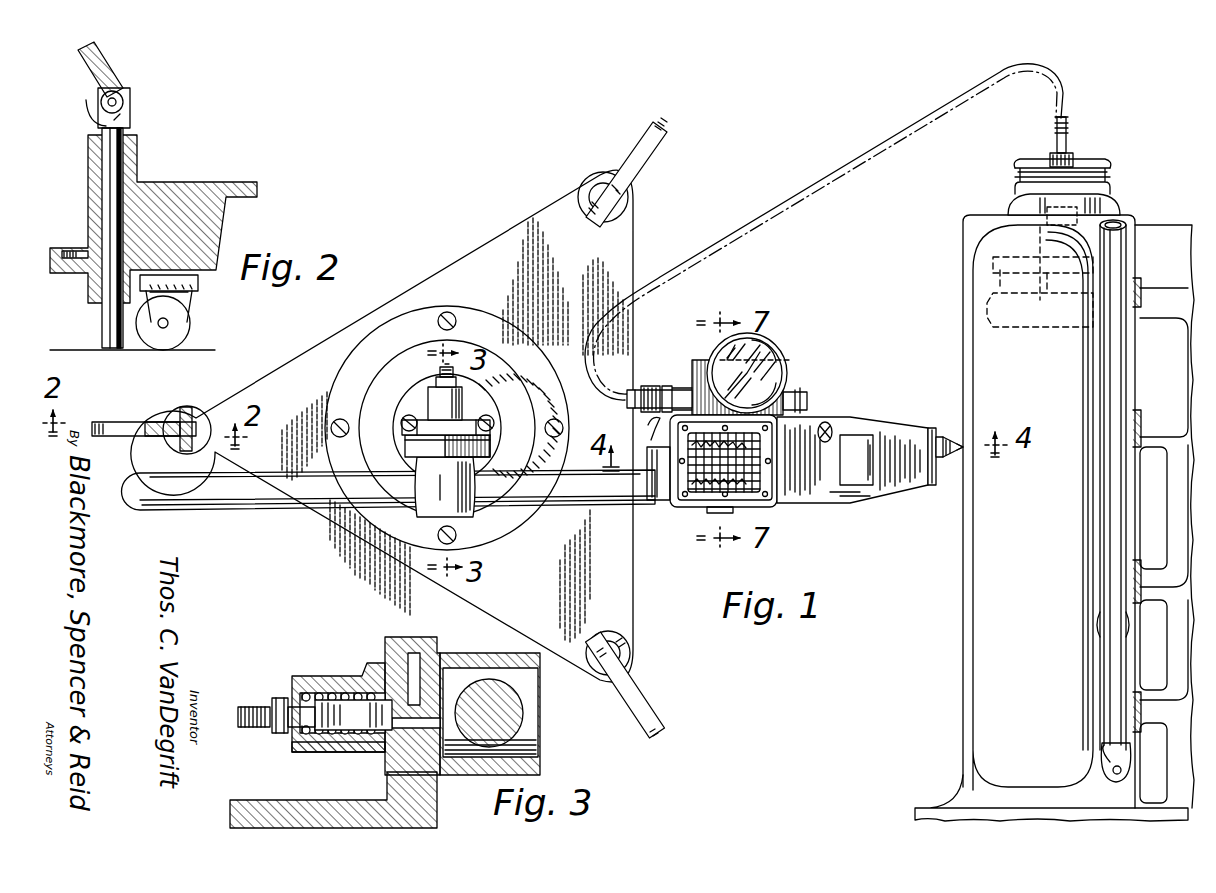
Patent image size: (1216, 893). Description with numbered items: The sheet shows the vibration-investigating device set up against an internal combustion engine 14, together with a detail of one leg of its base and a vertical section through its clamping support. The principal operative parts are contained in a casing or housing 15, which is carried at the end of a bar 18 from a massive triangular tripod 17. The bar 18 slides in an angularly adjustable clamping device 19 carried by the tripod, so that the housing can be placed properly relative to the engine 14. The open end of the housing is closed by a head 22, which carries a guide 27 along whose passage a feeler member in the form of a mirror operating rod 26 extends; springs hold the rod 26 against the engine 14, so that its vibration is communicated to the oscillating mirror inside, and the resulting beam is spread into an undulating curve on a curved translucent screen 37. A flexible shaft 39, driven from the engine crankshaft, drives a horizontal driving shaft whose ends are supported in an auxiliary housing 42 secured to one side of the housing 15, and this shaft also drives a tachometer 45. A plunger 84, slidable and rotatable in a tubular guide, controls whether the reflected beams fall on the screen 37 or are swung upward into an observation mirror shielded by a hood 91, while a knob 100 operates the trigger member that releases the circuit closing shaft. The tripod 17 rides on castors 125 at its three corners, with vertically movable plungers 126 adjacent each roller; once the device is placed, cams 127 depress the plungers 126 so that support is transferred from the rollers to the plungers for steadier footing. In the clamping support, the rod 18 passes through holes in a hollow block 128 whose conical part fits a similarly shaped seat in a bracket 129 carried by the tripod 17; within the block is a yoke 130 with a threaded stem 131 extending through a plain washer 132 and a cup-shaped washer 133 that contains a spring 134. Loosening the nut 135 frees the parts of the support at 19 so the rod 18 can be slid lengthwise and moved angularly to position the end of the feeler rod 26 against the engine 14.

In FIG. 1, the internal combustion engine 14 is at (997, 537).
In FIG. 1, the casing or housing 15 is at (842, 416).
In FIG. 2, the tripod 17 is at (225, 185).
In FIG. 1, the tripod 17 is at (477, 263).
In FIG. 1, the bar 18 is at (283, 492).
In FIG. 3, the bar 18 is at (513, 710).
In FIG. 1, the clamping device 19 is at (420, 405).
In FIG. 3, the clamping device 19 is at (377, 647).
In FIG. 1, the head 22 is at (927, 495).
In FIG. 1, the mirror operating rod 26 is at (962, 449).
In FIG. 1, the guide 27 is at (950, 443).
In FIG. 1, the translucent screen 37 is at (753, 487).
In FIG. 1, the flexible shaft 39 is at (668, 270).
In FIG. 1, the auxiliary housing 42 is at (697, 382).
In FIG. 1, the tachometer 45 is at (748, 378).
In FIG. 1, the plunger 84 is at (826, 422).
In FIG. 1, the hood 91 is at (857, 447).
In FIG. 1, the knob 100 is at (702, 508).
In FIG. 2, the castors 125 is at (178, 330).
In FIG. 2, the plungers 126 is at (112, 166).
In FIG. 2, the cams 127 is at (102, 74).
In FIG. 1, the cams 127 is at (110, 421).
In FIG. 3, the hollow block 128 is at (497, 655).
In FIG. 1, the bracket 129 is at (420, 442).
In FIG. 3, the bracket 129 is at (325, 812).
In FIG. 3, the yoke 130 is at (530, 725).
In FIG. 3, the threaded stem 131 is at (413, 703).
In FIG. 1, the plain washer 132 is at (422, 423).
In FIG. 3, the plain washer 132 is at (373, 670).
In FIG. 1, the cup-shaped washer 133 is at (432, 403).
In FIG. 3, the cup-shaped washer 133 is at (300, 751).
In FIG. 3, the spring 134 is at (337, 688).
In FIG. 1, the nut 135 is at (437, 387).
In FIG. 3, the nut 135 is at (273, 704).